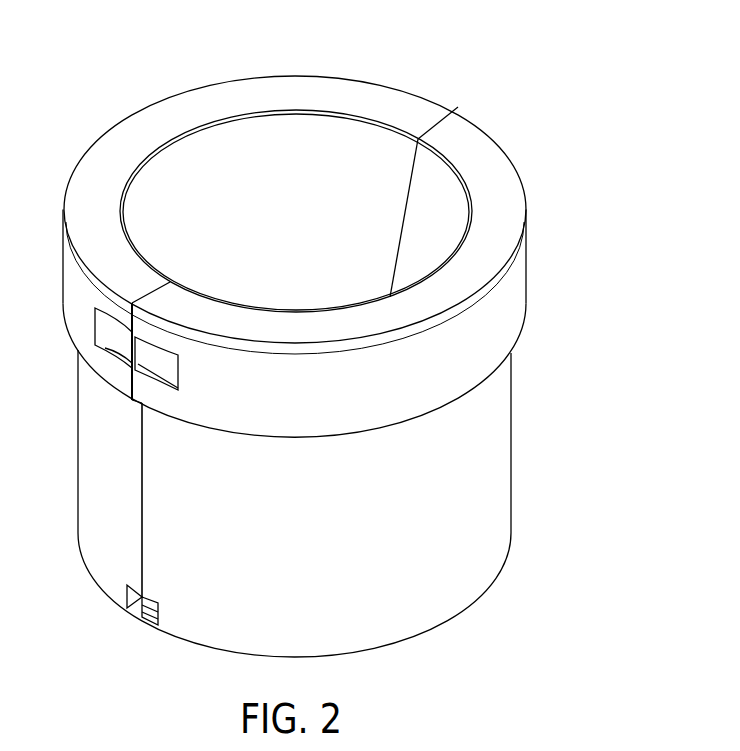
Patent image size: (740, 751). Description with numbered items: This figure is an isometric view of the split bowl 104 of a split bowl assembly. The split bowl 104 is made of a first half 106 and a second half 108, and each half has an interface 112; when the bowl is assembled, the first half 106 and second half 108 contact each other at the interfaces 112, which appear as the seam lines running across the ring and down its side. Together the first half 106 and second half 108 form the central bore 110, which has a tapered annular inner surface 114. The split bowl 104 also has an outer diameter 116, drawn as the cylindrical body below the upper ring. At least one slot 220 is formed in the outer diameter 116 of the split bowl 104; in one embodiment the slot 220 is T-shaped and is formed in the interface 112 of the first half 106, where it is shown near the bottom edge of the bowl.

The split bowl 104 is at (566, 93).
The first half 106 is at (232, 80).
The second half 108 is at (528, 207).
The central bore 110 is at (322, 228).
The interface 112 is at (437, 118).
The tapered annular inner surface 114 is at (368, 158).
The outer diameter 116 is at (511, 490).
The slot 220 is at (127, 598).